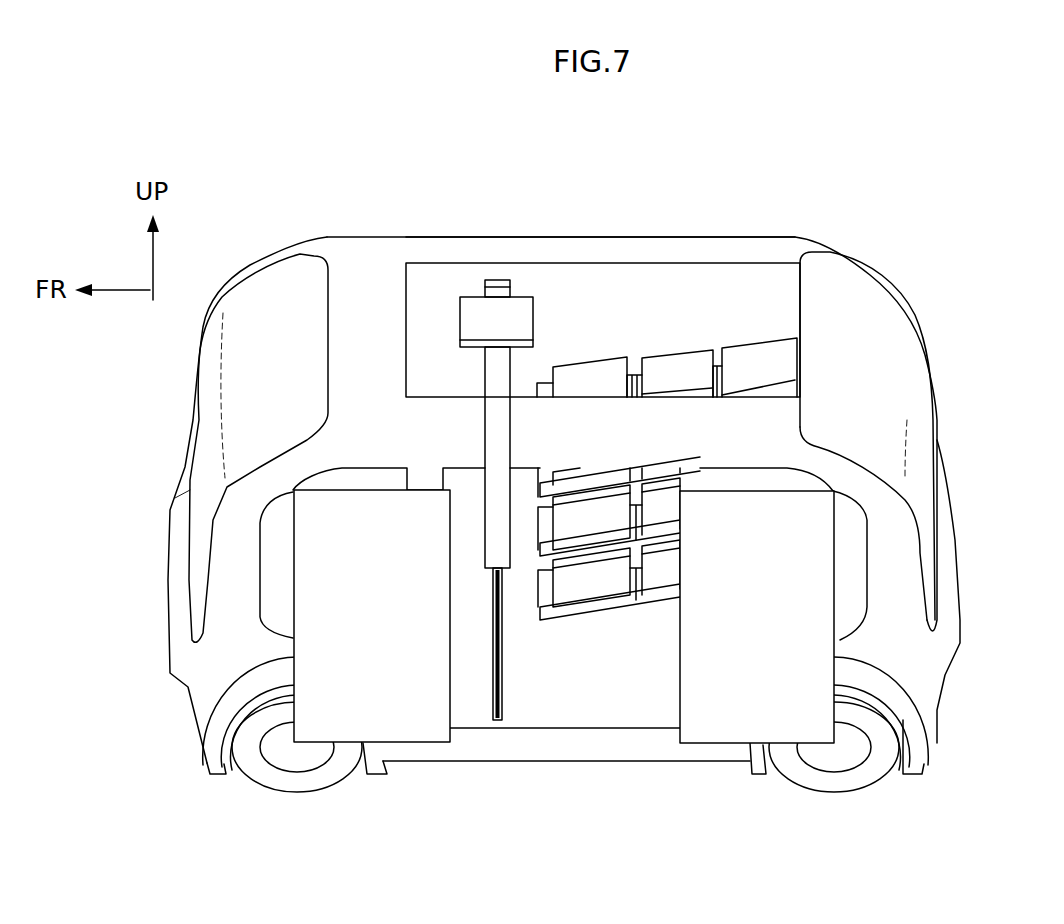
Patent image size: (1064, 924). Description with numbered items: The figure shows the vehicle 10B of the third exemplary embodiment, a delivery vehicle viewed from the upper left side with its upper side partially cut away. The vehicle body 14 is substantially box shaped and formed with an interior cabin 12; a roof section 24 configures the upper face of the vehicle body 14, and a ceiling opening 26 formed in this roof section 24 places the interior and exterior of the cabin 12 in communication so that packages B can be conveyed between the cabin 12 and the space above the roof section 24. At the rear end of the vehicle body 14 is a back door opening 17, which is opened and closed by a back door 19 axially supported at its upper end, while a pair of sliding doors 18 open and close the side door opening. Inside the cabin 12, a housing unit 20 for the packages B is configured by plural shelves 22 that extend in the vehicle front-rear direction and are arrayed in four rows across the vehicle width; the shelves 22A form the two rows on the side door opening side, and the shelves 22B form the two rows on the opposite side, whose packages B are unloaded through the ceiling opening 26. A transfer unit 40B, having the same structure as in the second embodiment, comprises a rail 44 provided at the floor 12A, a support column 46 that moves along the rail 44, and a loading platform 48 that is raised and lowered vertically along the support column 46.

The vehicle 10B is at (605, 477).
The cabin 12 is at (652, 310).
The floor 12A is at (615, 652).
The vehicle body 14 is at (707, 243).
The back door opening 17 is at (928, 513).
The sliding doors 18 is at (357, 692).
The back door 19 is at (942, 420).
The housing unit 20 is at (683, 335).
The shelves 22 is at (652, 494).
The shelves 22A is at (548, 537).
The shelves 22B is at (548, 480).
The roof section 24 is at (477, 248).
The ceiling opening 26 is at (742, 262).
The transfer unit 40B is at (438, 363).
The rail 44 is at (505, 676).
The support column 46 is at (483, 373).
The loading platform 48 is at (478, 318).
The packages B is at (594, 383).